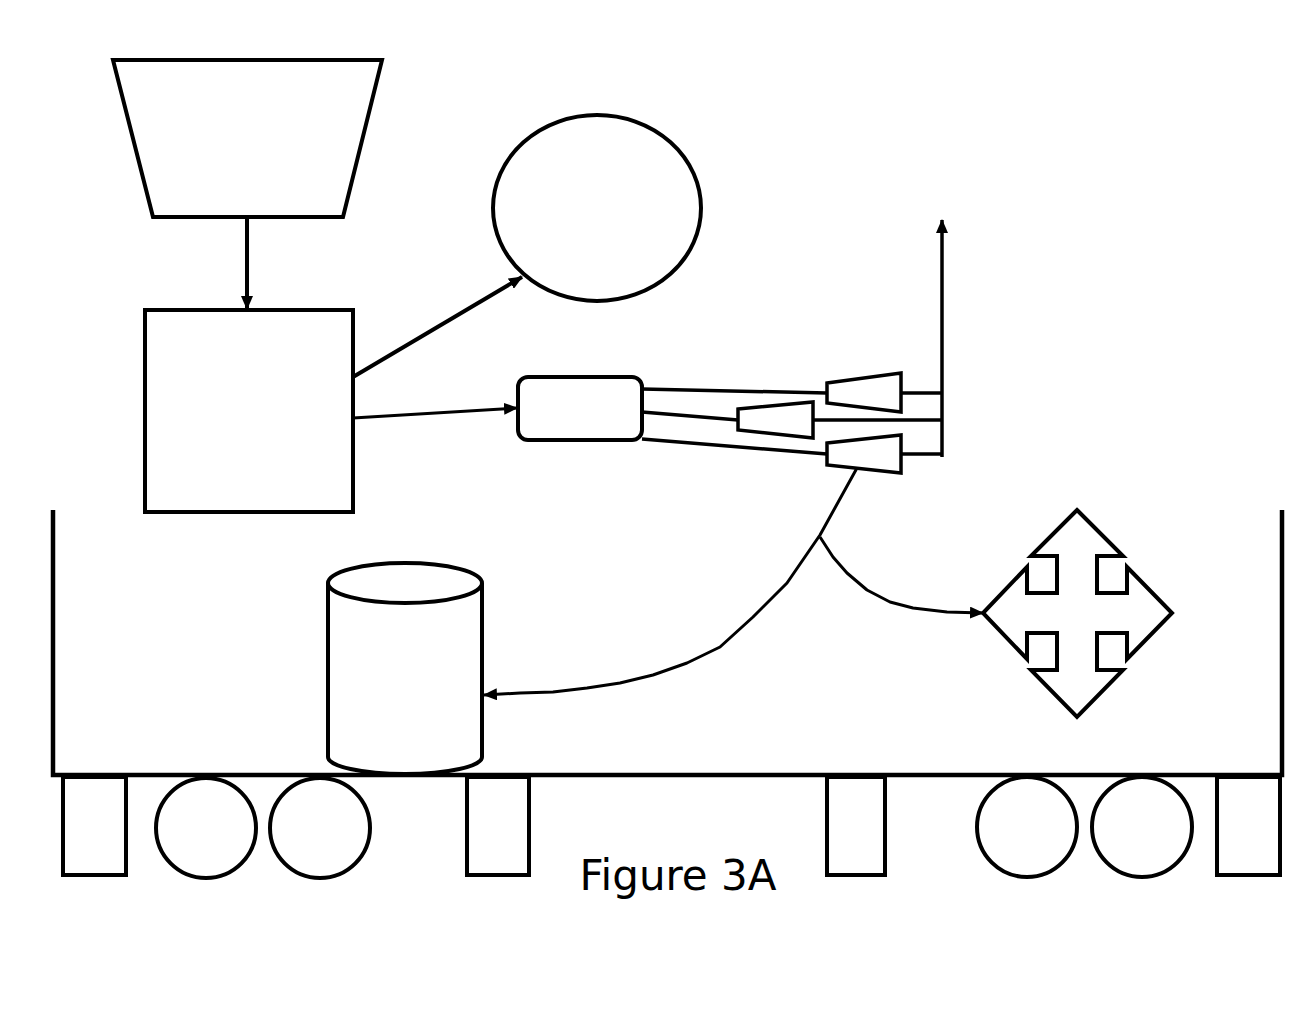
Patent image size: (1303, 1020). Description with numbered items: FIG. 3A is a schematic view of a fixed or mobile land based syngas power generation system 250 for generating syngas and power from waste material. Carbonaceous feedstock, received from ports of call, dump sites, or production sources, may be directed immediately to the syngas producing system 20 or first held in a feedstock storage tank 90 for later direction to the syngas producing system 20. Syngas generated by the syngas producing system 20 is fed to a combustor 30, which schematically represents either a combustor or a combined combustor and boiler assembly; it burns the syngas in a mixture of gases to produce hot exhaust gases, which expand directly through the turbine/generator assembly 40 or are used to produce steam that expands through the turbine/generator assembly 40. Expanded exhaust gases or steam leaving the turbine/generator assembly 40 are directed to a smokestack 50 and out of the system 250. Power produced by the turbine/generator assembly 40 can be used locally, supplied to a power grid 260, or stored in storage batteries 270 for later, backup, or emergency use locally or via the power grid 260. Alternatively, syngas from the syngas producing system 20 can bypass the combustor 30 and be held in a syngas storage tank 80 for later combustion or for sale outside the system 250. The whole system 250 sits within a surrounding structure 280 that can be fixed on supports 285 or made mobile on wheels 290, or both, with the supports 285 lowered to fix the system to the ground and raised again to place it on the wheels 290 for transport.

The syngas producing system 20 is at (210, 425).
The combustor 30 is at (544, 415).
The turbine/generator assembly 40 is at (922, 468).
The smokestack 50 is at (967, 338).
The syngas storage tank 80 is at (597, 208).
The feedstock storage tank 90 is at (212, 138).
The fixed or mobile land based syngas power generation system 250 is at (830, 128).
The power grid 260 is at (1050, 629).
The storage batteries 270 is at (378, 683).
The surrounding structure 280 is at (1280, 517).
The supports 285 is at (70, 843).
The wheels 290 is at (181, 843).